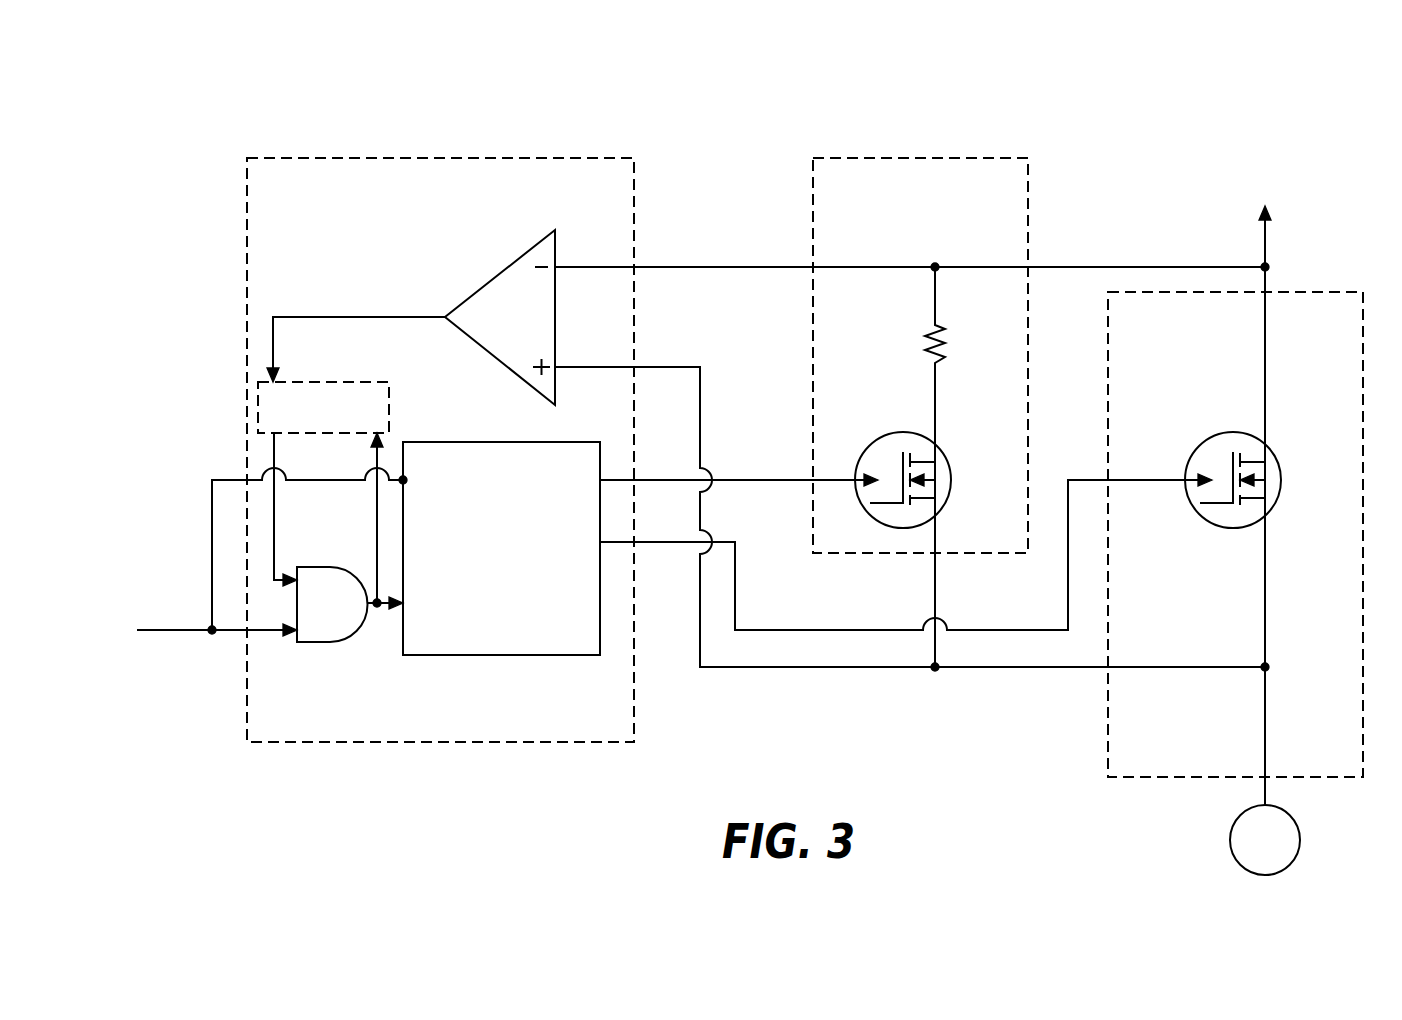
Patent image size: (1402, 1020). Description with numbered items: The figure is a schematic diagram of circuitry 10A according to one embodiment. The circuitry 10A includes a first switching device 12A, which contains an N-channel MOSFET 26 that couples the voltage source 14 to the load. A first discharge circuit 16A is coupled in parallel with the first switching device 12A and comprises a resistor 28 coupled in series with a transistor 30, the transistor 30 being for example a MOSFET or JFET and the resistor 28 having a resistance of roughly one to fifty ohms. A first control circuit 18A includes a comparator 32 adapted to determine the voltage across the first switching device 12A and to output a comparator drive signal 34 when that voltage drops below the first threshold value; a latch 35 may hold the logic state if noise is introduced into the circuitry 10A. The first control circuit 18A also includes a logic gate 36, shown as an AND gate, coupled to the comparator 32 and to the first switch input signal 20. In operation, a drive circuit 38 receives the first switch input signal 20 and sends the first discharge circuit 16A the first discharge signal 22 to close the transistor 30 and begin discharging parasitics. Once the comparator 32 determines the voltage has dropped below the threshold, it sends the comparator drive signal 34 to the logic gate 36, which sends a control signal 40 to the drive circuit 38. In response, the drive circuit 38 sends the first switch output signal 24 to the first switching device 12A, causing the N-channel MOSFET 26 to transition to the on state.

The circuitry 10A is at (1245, 122).
The first switching device 12A is at (1313, 292).
The voltage source 14 is at (1297, 818).
The first discharge circuit 16A is at (893, 157).
The first control circuit 18A is at (360, 157).
The first switch input signal 20 is at (165, 632).
The first discharge signal 22 is at (745, 483).
The first switch output signal 24 is at (978, 630).
The N-channel MOSFET 26 is at (1272, 453).
The resistor 28 is at (947, 338).
The transistor 30 is at (944, 455).
The comparator 32 is at (555, 308).
The comparator drive signal 34 is at (330, 317).
The latch 35 is at (389, 400).
The logic gate 36 is at (332, 643).
The drive circuit 38 is at (513, 630).
The control signal 40 is at (383, 612).